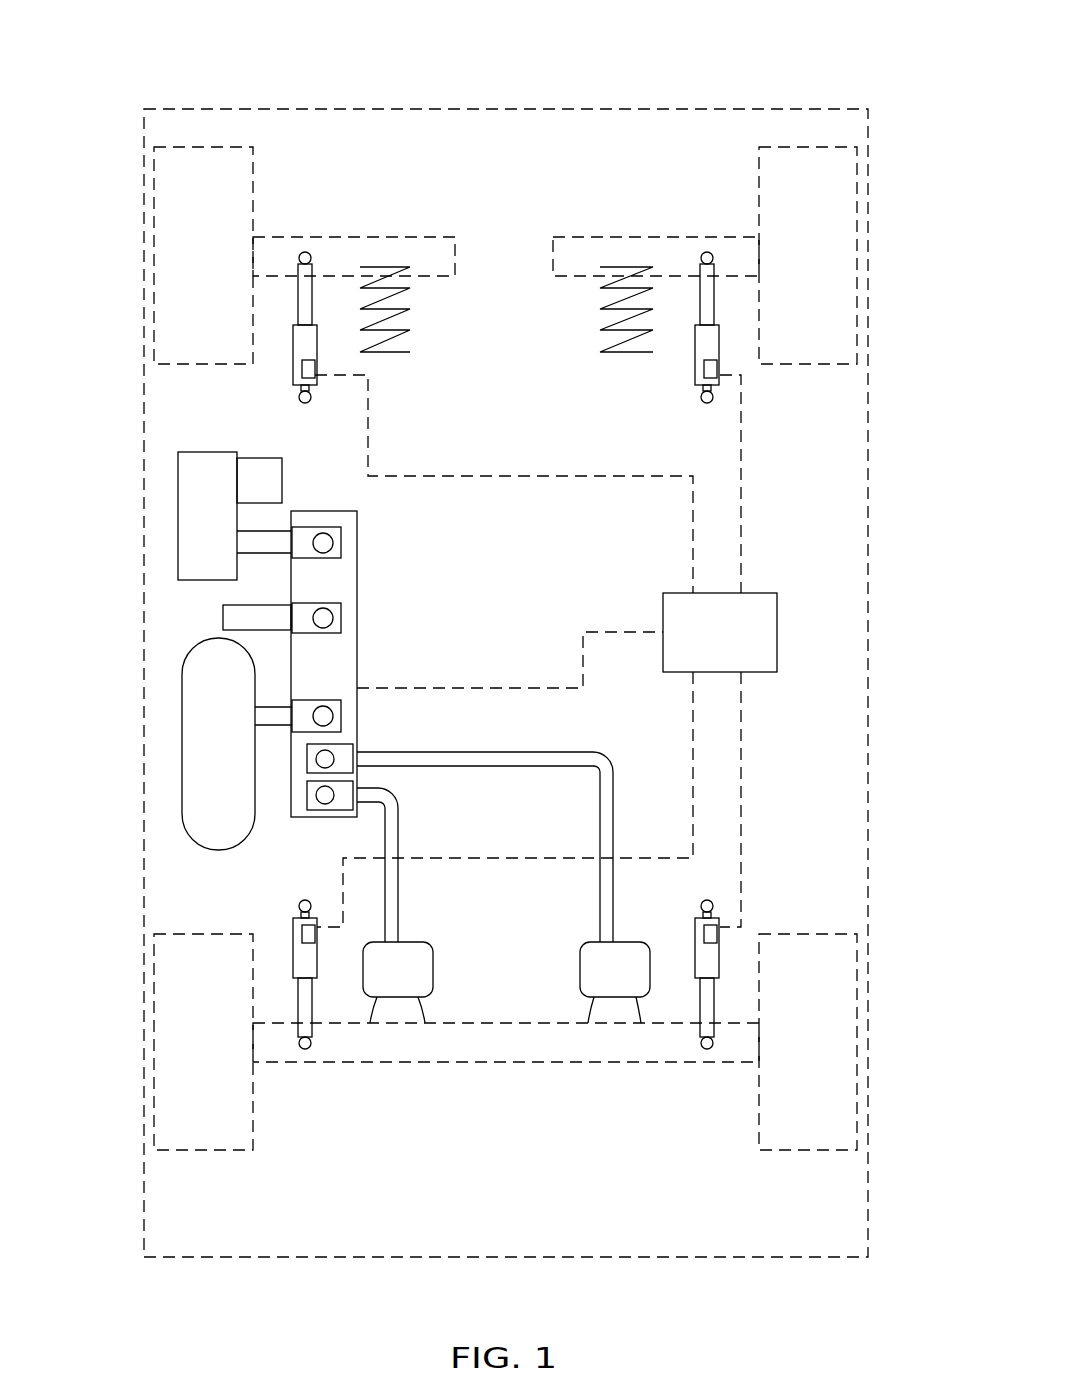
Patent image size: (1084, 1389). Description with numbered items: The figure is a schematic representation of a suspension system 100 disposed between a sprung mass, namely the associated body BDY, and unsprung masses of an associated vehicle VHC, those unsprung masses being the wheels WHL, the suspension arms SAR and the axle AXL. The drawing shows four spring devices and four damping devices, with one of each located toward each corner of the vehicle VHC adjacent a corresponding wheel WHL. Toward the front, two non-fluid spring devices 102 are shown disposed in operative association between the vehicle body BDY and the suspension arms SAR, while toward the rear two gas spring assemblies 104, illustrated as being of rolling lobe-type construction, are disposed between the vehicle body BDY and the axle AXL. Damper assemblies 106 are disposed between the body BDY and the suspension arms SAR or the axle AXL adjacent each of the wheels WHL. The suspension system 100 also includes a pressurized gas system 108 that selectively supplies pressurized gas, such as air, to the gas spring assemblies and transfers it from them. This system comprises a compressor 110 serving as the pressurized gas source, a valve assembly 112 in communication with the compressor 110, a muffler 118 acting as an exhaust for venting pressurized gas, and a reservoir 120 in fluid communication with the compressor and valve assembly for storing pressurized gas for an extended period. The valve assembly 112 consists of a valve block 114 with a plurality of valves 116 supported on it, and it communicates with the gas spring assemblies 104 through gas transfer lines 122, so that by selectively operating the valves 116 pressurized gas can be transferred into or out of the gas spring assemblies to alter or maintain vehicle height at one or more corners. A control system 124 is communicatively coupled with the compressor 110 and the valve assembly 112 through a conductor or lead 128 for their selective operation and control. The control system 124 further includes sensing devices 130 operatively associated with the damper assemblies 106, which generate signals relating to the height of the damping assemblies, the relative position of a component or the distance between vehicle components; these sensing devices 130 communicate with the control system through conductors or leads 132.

The suspension system 100 is at (848, 420).
The non-fluid spring devices 102 is at (433, 315).
The gas spring assemblies 104 is at (450, 966).
The damper assemblies 106 is at (313, 290).
The pressurized gas system 108 is at (138, 583).
The compressor 110 is at (200, 482).
The valve assembly 112 is at (370, 583).
The valve block 114 is at (357, 540).
The valves 116 is at (332, 620).
The muffler 118 is at (223, 617).
The reservoir 120 is at (182, 745).
The gas transfer lines 122 is at (398, 835).
The control system 124 is at (765, 547).
The conductor or lead 128 is at (524, 688).
The sensing devices 130 is at (302, 370).
The conductors or leads 132 is at (368, 420).
The body BDY is at (648, 109).
The vehicle VHC is at (832, 70).
The wheel WHL is at (172, 200).
The suspension arm SAR is at (436, 250).
The axle AXL is at (523, 1062).